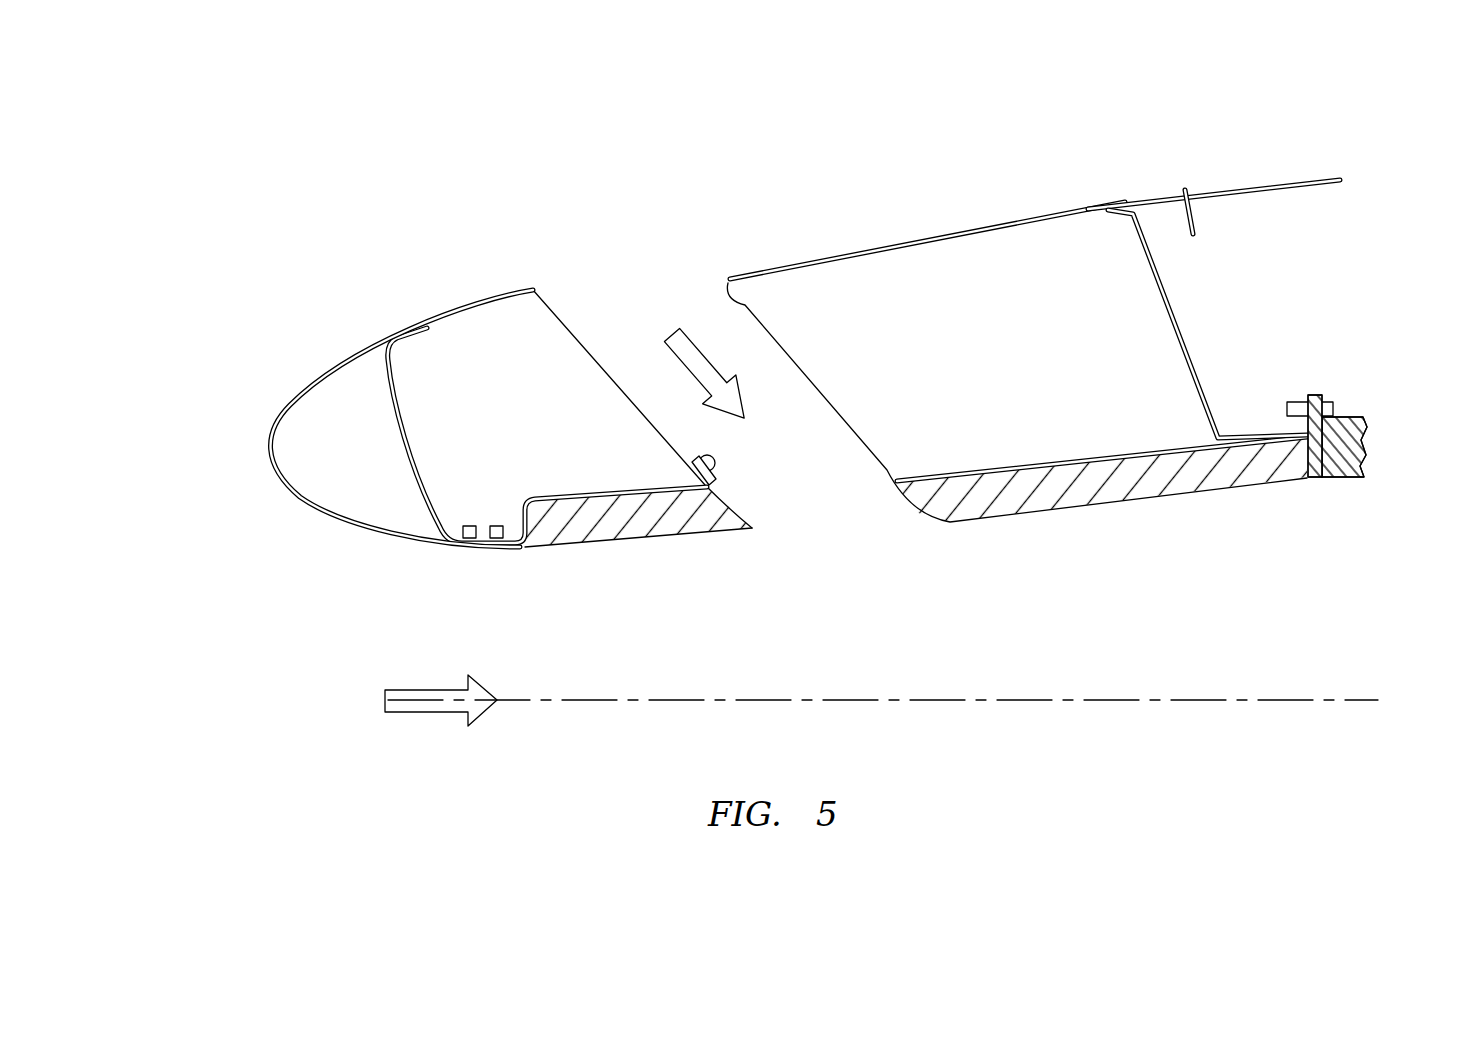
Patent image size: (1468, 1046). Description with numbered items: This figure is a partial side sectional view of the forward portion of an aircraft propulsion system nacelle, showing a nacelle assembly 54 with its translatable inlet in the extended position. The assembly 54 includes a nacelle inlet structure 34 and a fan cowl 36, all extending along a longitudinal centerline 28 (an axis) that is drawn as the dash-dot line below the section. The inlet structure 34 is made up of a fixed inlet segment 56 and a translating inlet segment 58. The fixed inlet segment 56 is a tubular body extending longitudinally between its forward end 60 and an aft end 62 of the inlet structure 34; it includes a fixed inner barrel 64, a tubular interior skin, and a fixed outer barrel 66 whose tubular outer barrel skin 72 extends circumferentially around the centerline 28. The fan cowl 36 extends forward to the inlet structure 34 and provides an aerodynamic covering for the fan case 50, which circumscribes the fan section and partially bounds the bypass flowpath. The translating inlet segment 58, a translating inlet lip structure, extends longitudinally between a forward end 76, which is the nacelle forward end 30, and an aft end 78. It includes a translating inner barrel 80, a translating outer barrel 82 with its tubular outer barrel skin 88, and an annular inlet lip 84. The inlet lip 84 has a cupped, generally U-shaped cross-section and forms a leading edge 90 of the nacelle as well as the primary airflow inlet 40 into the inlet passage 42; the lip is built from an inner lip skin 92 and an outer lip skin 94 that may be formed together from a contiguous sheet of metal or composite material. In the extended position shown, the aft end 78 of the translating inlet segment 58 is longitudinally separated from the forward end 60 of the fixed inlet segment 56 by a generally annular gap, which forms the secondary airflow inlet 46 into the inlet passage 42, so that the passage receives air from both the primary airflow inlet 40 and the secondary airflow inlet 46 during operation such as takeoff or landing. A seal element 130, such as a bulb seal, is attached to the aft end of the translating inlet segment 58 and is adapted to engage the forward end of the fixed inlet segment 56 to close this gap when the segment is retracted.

The longitudinal centerline 28 is at (1352, 700).
The nacelle forward end 30 is at (398, 383).
The nacelle inlet structure 34 is at (1085, 342).
The fan cowl 36 is at (1312, 172).
The primary airflow inlet 40 is at (457, 383).
The inlet passage 42 is at (874, 646).
The secondary airflow inlet 46 is at (658, 278).
The fan case 50 is at (1365, 443).
The nacelle assembly 54 is at (398, 364).
The fixed inlet segment 56 is at (927, 210).
The translating inlet segment 58 is at (398, 412).
The forward end of the fixed inlet segment 60 is at (727, 284).
The aft end of the inlet structure 62 is at (1190, 218).
The fixed inner barrel 64 is at (1085, 505).
The fixed outer barrel 66 is at (927, 210).
The outer barrel skin 72 is at (978, 220).
The forward end of the translating inlet segment 76 is at (418, 383).
The aft end of the translating inlet segment 78 is at (638, 425).
The translating inner barrel 80 is at (573, 550).
The translating outer barrel 82 is at (547, 381).
The inlet lip 84 is at (398, 412).
The outer barrel skin 88 is at (547, 381).
The leading edge 90 is at (438, 383).
The inner lip skin 92 is at (398, 412).
The outer lip skin 94 is at (398, 412).
The seal element 130 is at (722, 468).